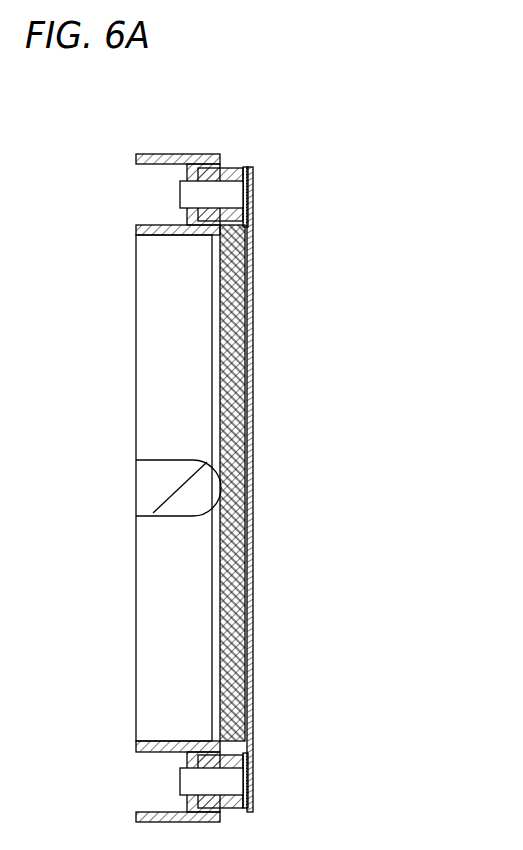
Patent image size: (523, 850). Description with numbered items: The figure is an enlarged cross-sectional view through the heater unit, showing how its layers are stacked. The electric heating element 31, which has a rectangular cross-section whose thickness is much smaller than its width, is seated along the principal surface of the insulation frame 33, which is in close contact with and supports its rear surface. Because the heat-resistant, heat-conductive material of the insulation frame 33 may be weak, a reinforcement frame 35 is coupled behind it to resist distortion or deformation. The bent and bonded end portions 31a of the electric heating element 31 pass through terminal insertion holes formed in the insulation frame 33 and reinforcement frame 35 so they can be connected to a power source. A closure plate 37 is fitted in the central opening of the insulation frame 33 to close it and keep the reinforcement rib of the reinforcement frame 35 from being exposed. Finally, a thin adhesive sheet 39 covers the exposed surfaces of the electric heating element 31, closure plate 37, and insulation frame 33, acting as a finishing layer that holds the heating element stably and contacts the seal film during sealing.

The electric heating element 31 is at (254, 203).
The bent and bonded end portions 31a is at (213, 189).
The insulation frame 33 is at (243, 355).
The reinforcement frame 35 is at (228, 170).
The closure plate 37 is at (174, 236).
The adhesive sheet 39 is at (253, 465).